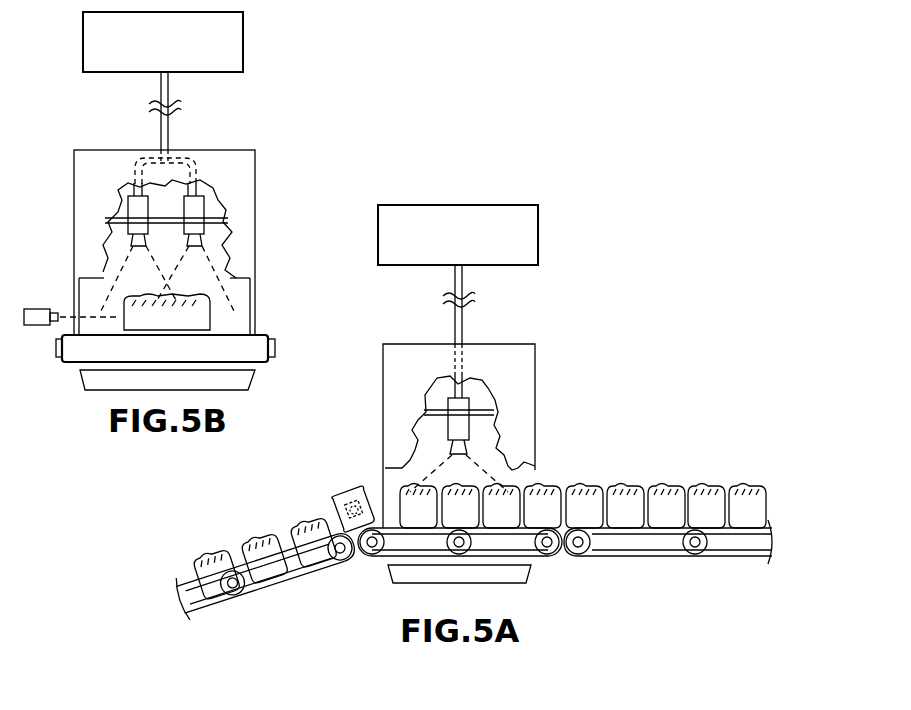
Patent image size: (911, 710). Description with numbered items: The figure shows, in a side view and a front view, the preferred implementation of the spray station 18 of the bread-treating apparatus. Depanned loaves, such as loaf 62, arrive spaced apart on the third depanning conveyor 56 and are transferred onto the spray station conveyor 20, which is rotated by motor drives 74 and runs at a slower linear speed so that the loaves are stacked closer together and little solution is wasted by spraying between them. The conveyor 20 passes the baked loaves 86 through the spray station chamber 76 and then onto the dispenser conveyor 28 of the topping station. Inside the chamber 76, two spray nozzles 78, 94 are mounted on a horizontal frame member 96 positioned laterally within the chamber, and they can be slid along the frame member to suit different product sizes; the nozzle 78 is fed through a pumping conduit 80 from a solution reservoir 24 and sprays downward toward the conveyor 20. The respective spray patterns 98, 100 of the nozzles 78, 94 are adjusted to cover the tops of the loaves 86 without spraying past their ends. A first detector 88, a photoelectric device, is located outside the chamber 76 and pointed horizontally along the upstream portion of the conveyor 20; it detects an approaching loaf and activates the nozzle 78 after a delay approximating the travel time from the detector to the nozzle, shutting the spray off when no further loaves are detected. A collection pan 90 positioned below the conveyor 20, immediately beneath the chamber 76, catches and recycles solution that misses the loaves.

In FIG. 5B, the spray station 18 is at (56, 170).
In FIG. 5A, the spray station 18 is at (366, 366).
In FIG. 5B, the spray station conveyor 20 is at (263, 363).
In FIG. 5A, the spray station conveyor 20 is at (376, 558).
In FIG. 5B, the solution reservoir 24 is at (243, 42).
In FIG. 5A, the solution reservoir 24 is at (538, 235).
In FIG. 5A, the dispenser conveyor 28 is at (722, 558).
In FIG. 5A, the third depanning conveyor 56 is at (268, 590).
In FIG. 5A, the loaf 62 is at (298, 504).
In FIG. 5B, the motor drive 74 is at (275, 348).
In FIG. 5B, the spray station chamber 76 is at (255, 161).
In FIG. 5A, the spray station chamber 76 is at (535, 357).
In FIG. 5B, the nozzle 78 is at (210, 200).
In FIG. 5A, the nozzle 78 is at (475, 412).
In FIG. 5B, the pumping conduit 80 is at (170, 134).
In FIG. 5A, the pumping conduit 80 is at (464, 327).
In FIG. 5B, the bread loaf / product 86 is at (212, 311).
In FIG. 5A, the bread loaf / product 86 is at (626, 486).
In FIG. 5B, the first detector 88 is at (38, 326).
In FIG. 5A, the first detector 88 is at (353, 488).
In FIG. 5B, the collection pan 90 is at (80, 380).
In FIG. 5A, the collection pan 90 is at (531, 572).
In FIG. 5B, the spray nozzle 94 is at (110, 228).
In FIG. 5B, the horizontal frame member 96 is at (122, 215).
In FIG. 5A, the horizontal frame member 96 is at (440, 412).
In FIG. 5B, the spray pattern 98 is at (210, 266).
In FIG. 5A, the spray pattern 98 is at (498, 464).
In FIG. 5B, the spray pattern 100 is at (100, 298).